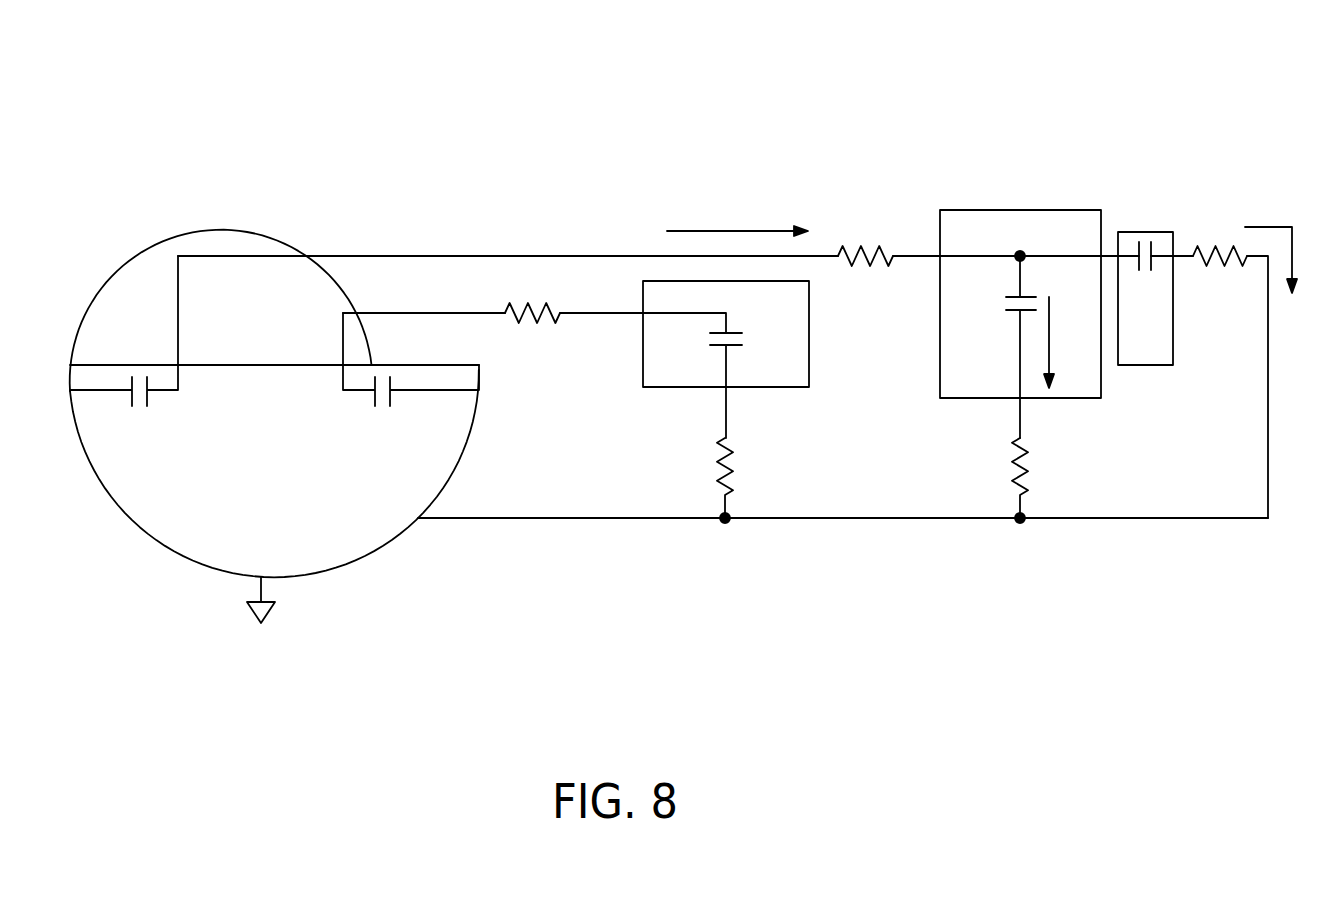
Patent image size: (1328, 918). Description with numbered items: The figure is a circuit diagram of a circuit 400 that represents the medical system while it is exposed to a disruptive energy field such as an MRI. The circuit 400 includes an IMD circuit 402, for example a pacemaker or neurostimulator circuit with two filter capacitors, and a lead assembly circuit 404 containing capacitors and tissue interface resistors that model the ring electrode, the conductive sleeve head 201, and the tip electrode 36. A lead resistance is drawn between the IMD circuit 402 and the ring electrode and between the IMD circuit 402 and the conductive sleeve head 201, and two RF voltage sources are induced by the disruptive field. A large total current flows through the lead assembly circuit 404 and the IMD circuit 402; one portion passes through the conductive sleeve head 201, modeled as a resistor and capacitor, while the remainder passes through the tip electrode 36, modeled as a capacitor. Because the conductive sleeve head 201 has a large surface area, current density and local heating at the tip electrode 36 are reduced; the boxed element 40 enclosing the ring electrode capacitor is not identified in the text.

The circuit 400 is at (747, 100).
The IMD circuit 402 is at (167, 228).
The lead assembly circuit 404 is at (907, 628).
The voltage sensor 40 is at (809, 337).
The conductive sleeve head 201 is at (1017, 210).
The tip electrode 36 is at (1143, 232).